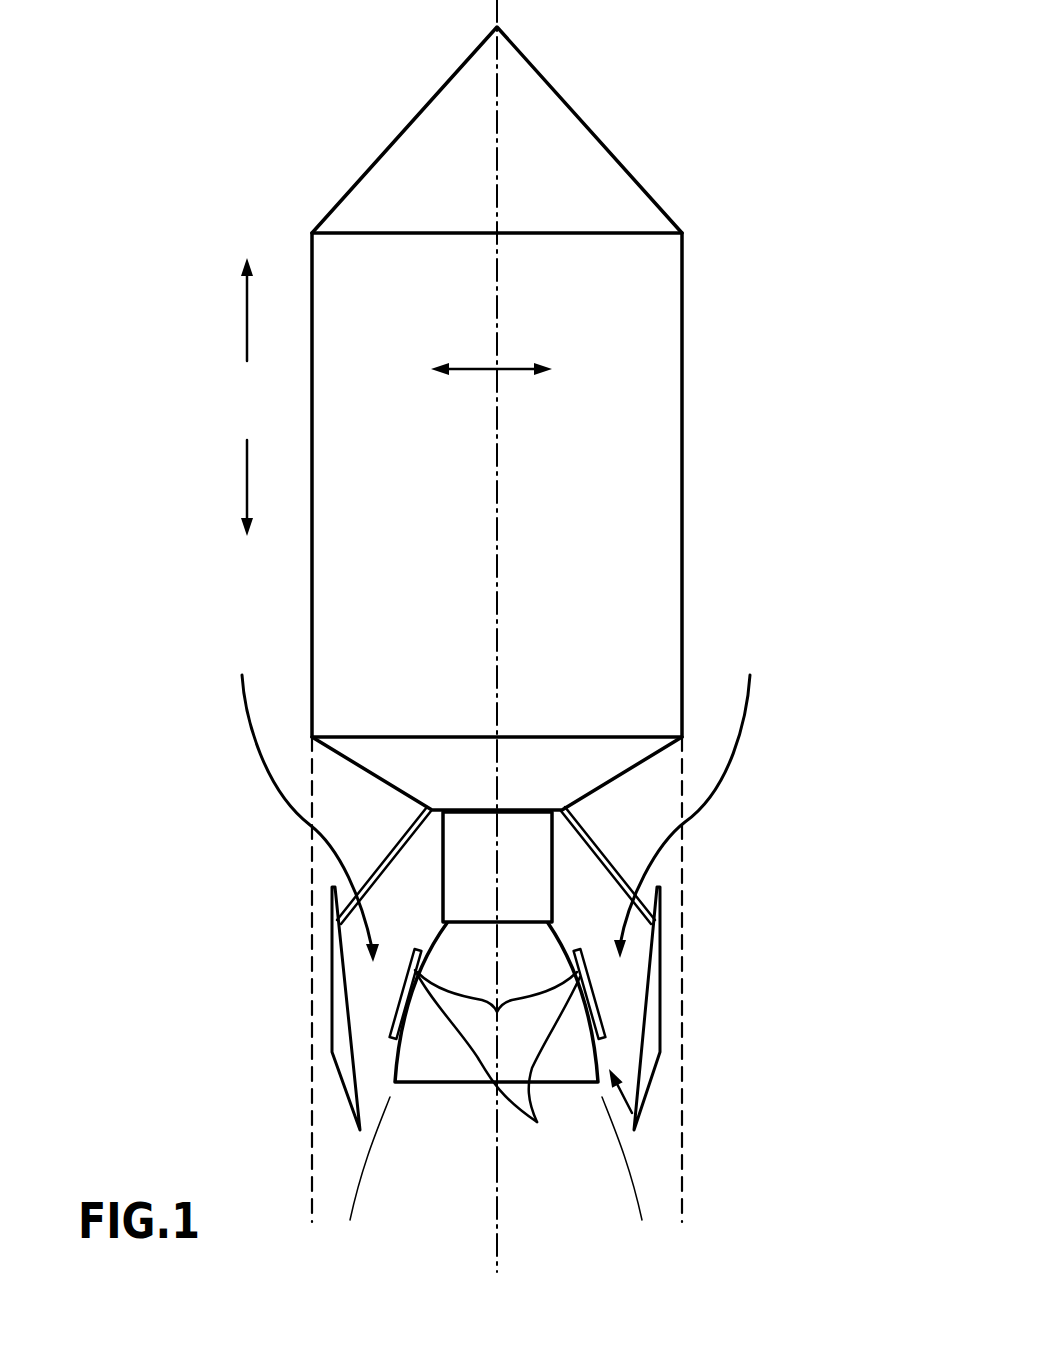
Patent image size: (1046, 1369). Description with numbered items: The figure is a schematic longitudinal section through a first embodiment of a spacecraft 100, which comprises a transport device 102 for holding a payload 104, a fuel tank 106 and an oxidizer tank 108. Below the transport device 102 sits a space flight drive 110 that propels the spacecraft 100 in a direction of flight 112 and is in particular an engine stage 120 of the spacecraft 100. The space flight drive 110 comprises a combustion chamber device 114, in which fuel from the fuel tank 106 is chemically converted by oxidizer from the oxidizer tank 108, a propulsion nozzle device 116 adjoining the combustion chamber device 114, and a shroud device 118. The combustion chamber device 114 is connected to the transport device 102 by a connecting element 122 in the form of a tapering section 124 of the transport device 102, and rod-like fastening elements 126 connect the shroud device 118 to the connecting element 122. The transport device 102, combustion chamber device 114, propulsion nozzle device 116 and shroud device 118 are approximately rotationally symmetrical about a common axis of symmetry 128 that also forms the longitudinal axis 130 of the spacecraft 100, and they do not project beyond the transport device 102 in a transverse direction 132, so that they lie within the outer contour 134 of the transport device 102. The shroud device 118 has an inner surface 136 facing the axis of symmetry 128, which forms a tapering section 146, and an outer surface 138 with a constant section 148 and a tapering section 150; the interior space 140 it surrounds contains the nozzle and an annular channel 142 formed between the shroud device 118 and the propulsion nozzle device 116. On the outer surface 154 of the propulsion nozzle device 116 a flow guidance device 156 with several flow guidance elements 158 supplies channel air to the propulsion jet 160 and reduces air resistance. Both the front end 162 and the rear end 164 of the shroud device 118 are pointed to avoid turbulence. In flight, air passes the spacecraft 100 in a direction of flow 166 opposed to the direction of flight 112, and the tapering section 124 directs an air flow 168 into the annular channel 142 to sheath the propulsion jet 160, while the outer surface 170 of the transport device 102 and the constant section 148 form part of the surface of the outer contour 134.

The spacecraft 100 is at (745, 172).
The transport device 102 is at (652, 330).
The payload 104 is at (530, 100).
The fuel tank 106 is at (650, 423).
The oxidizer tank 108 is at (657, 496).
The space flight drive 110 is at (716, 888).
The direction of flight 112 is at (247, 323).
The combustion chamber device 114 is at (422, 887).
The propulsion nozzle device 116 is at (435, 1053).
The shroud device 118 is at (648, 1053).
The engine stage 120 is at (253, 815).
The connecting element 122 is at (522, 753).
The tapering section 124 is at (550, 753).
The fastening elements 126 is at (562, 810).
The axis of symmetry 128 is at (497, 1160).
The longitudinal axis 130 is at (497, 1210).
The transverse direction 132 is at (483, 366).
The outer contour 134 is at (683, 867).
The inner surface 136 is at (637, 1042).
The outer surface 138 is at (662, 1010).
The interior space 140 is at (376, 986).
The annular channel 142 is at (636, 1128).
The tapering section 146 is at (646, 933).
The constant section 148 is at (662, 969).
The tapering section 150 is at (650, 1092).
The outer surface 154 is at (428, 1018).
The flow guidance device 156 is at (497, 1061).
The flow guidance elements 158 is at (498, 998).
The propulsion jet 160 is at (607, 1173).
The front end 162 is at (330, 888).
The rear end 164 is at (360, 1130).
The direction of flow 166 is at (247, 488).
The air flow 168 is at (743, 740).
The outer surface 170 is at (682, 553).